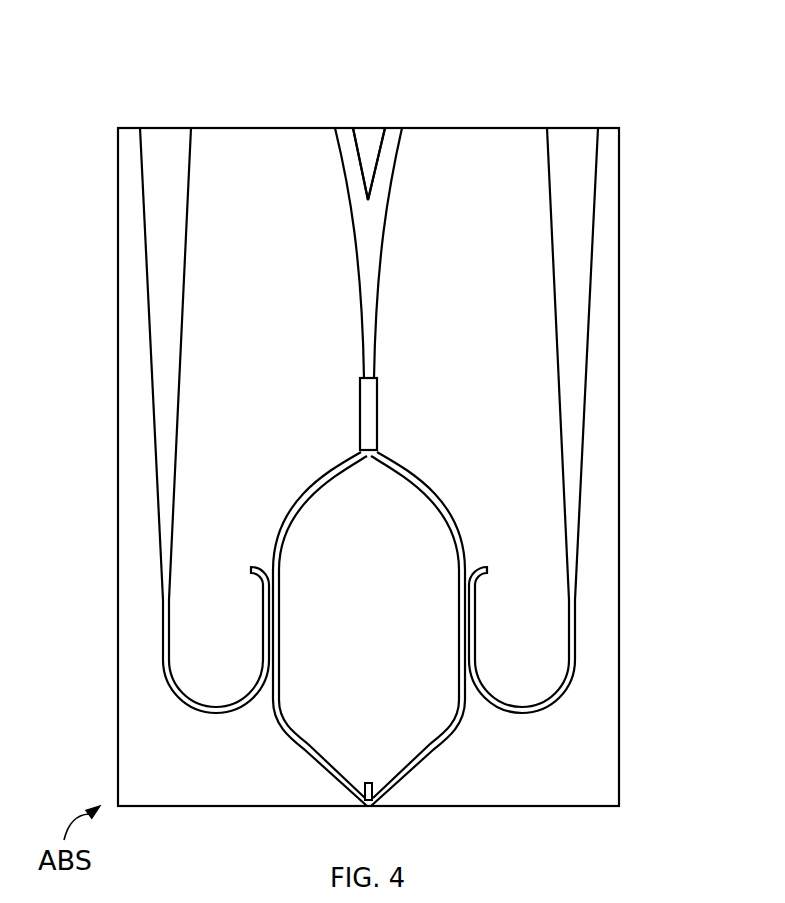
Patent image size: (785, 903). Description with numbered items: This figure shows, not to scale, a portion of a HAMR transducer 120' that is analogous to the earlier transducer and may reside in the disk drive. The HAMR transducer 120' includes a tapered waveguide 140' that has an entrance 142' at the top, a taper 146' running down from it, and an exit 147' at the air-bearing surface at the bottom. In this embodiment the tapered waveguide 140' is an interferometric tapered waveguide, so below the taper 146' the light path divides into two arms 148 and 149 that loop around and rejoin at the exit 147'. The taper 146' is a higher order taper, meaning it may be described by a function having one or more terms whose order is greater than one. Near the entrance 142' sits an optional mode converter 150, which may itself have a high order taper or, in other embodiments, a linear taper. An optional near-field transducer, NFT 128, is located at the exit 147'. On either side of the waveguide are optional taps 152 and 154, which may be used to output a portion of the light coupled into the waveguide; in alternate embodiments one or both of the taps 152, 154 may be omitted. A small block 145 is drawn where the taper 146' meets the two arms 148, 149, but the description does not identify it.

The HAMR transducer 120' is at (368, 414).
The tap 154 is at (148, 287).
The tap 152 is at (590, 287).
The taper 146' is at (293, 219).
The mode converter 150 is at (360, 127).
The entrance 142' is at (409, 133).
The tapered waveguide 140' is at (377, 209).
The waveguide splitter 145 is at (377, 396).
The arm 148 is at (285, 730).
The arm 149 is at (457, 723).
The NFT 128 is at (372, 790).
The exit 147' is at (412, 818).